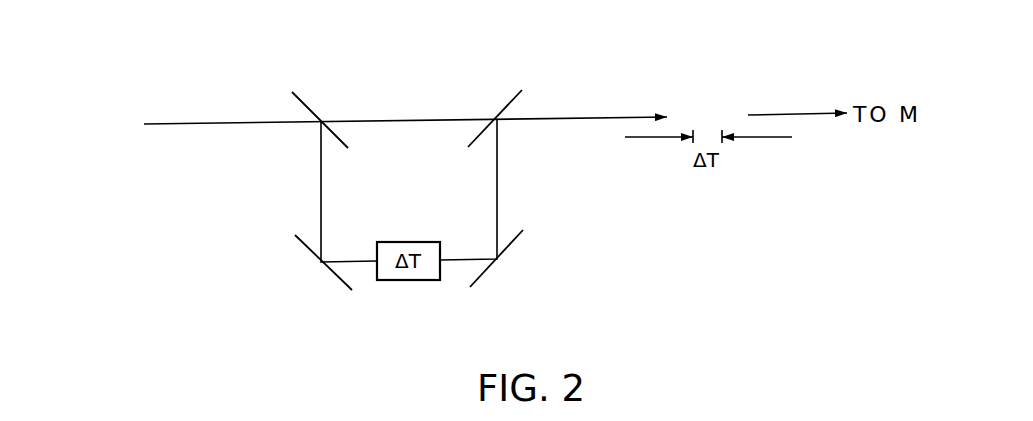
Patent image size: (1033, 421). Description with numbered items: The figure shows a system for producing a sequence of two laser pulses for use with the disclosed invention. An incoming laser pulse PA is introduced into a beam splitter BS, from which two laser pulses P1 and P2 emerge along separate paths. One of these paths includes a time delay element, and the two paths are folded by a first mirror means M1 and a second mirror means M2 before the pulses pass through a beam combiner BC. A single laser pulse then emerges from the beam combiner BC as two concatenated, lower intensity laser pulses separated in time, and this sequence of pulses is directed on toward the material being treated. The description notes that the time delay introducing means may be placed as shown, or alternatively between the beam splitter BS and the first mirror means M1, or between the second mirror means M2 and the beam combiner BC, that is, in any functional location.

The input light pulse PA is at (157, 92).
The beam splitter BS is at (295, 85).
The beam combiner BC is at (510, 102).
The laser pulse P1 is at (400, 92).
The laser pulse P2 is at (688, 100).
The first mirror means M1 is at (310, 252).
The second mirror means M2 is at (517, 247).